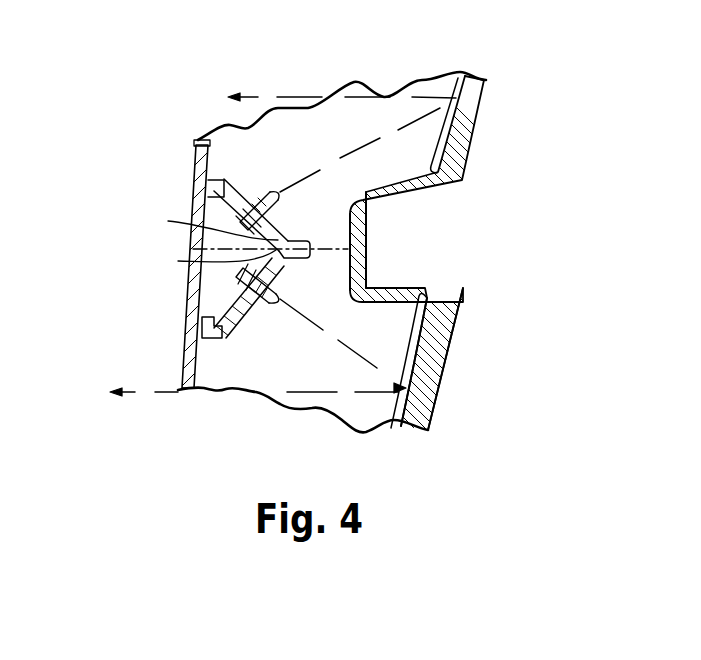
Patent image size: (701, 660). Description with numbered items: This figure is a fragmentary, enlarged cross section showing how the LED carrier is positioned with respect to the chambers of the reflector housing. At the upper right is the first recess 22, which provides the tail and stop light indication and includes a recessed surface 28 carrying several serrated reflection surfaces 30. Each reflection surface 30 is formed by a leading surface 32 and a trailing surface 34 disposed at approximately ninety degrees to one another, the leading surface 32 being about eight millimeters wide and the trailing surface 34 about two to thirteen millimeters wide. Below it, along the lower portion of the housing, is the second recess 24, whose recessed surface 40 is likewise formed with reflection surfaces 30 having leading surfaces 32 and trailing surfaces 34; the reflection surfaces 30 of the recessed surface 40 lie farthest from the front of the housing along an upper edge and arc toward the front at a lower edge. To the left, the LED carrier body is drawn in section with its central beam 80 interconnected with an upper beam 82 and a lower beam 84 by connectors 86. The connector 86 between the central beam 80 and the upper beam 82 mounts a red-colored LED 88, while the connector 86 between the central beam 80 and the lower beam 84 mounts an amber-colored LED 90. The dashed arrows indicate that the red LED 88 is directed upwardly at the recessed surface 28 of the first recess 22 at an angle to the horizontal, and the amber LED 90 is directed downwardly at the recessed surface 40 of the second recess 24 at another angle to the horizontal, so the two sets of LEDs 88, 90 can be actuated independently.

The first recess 22 is at (475, 138).
The second recess 24 is at (437, 400).
The recessed surface 28 is at (437, 150).
The reflection surfaces 30 is at (450, 103).
The leading surface 32 is at (487, 93).
The trailing surface 34 is at (440, 73).
The recessed surface 40 is at (420, 343).
The central beam 80 is at (367, 224).
The upper beam 82 is at (221, 185).
The lower beam 84 is at (210, 318).
The connectors 86 is at (209, 242).
The red-colored LED 88 is at (258, 186).
The amber-colored LED 90 is at (262, 306).